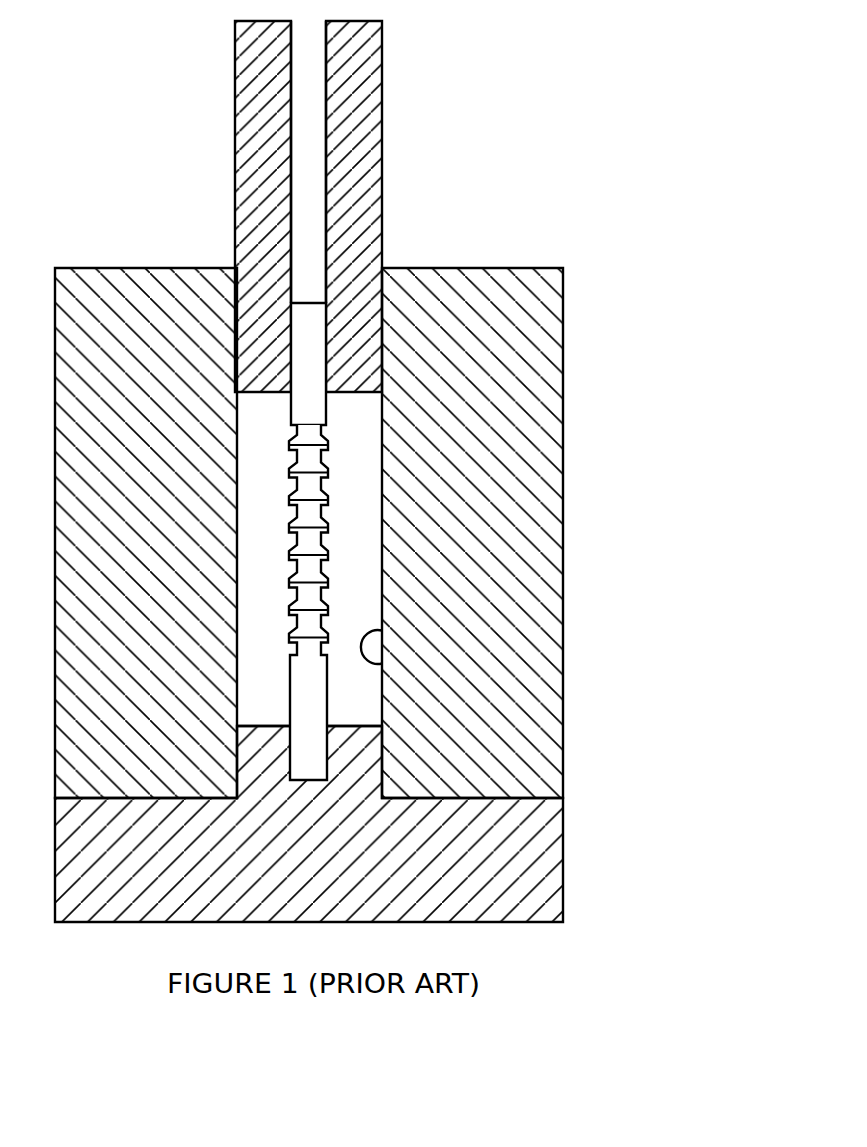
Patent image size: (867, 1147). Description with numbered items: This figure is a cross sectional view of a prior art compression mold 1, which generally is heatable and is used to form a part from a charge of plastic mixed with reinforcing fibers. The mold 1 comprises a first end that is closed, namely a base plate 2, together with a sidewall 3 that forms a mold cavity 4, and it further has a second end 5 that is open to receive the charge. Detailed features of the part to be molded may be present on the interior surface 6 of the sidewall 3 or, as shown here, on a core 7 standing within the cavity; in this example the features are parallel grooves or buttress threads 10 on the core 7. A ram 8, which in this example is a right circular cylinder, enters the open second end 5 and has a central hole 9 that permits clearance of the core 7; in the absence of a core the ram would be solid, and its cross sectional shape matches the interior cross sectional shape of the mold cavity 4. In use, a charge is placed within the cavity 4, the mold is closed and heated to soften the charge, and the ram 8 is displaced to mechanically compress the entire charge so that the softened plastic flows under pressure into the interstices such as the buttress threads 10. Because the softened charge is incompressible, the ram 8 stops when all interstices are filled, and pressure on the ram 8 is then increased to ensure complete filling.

The compression mold 1 is at (386, 595).
The base plate 2 is at (563, 848).
The sidewall 3 is at (563, 585).
The mold cavity 4 is at (345, 568).
The second end 5 is at (398, 250).
The interior surface 6 is at (385, 664).
The core 7 is at (327, 408).
The ram 8 is at (382, 125).
The central hole 9 is at (316, 223).
The buttress threads 10 is at (330, 485).